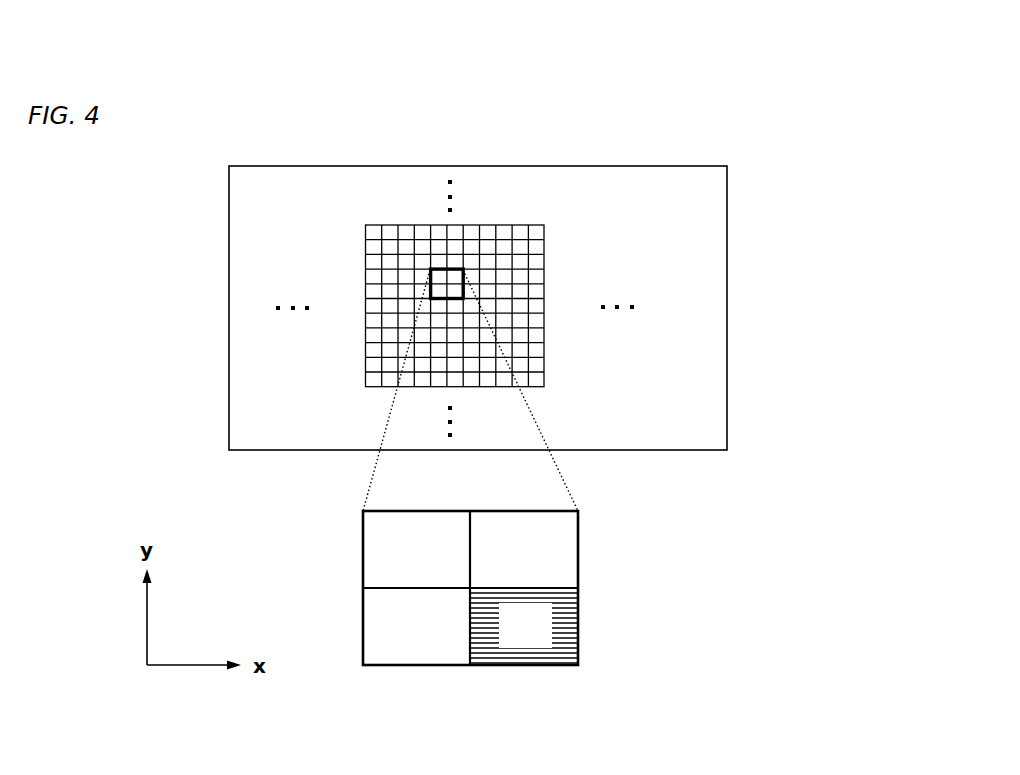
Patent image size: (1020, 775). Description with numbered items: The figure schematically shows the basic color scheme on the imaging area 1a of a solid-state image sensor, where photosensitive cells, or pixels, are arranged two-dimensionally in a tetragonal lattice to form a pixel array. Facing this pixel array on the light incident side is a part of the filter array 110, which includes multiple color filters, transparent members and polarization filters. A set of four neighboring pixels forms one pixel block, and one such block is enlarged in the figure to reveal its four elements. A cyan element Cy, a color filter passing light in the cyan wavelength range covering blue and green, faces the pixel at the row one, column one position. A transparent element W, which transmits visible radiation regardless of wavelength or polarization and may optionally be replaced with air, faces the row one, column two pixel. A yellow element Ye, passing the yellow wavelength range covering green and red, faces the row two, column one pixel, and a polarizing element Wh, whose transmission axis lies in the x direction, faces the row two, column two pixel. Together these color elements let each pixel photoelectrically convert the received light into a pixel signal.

The imaging area 1a is at (538, 308).
The filter array 110 is at (503, 300).
The cyan element Cy is at (416, 549).
The transparent element W is at (524, 549).
The yellow element Ye is at (416, 626).
The polarizing element Wh is at (524, 628).